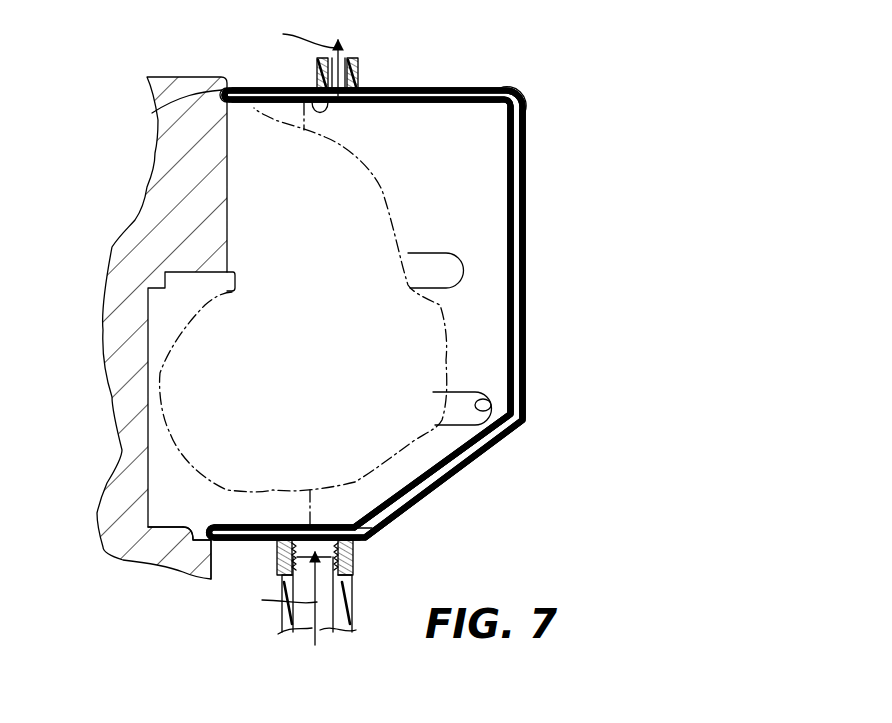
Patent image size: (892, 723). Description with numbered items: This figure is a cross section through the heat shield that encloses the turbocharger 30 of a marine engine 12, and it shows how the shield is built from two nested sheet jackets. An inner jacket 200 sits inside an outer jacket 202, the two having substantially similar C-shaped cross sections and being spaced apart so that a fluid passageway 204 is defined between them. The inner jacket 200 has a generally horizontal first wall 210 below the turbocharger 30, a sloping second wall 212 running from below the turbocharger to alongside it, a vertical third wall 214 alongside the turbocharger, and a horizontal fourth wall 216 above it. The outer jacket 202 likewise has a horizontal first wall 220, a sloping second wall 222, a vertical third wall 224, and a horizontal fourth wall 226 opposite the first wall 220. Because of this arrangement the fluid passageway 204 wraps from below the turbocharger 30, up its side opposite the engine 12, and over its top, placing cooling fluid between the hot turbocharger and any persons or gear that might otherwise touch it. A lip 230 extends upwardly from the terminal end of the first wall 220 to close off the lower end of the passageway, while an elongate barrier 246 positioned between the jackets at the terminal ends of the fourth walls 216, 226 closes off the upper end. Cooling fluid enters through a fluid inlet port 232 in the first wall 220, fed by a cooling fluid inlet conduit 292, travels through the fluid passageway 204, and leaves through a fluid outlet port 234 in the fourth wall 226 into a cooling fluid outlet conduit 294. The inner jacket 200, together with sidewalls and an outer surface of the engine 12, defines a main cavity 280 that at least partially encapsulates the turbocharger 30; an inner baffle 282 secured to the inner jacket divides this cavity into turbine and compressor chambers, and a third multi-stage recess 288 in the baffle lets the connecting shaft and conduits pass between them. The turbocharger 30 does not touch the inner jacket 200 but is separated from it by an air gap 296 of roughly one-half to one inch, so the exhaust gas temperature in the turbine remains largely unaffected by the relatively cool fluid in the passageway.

The marine engine 12 is at (100, 309).
The turbocharger 30 is at (390, 184).
The inner jacket 200 is at (505, 184).
The outer jacket 202 is at (529, 236).
The fluid passageway 204 is at (517, 165).
The first wall of inner jacket 210 is at (120, 465).
The second wall of inner jacket 212 is at (477, 453).
The third wall of inner jacket 214 is at (512, 302).
The fourth wall of inner jacket 216 is at (470, 104).
The first wall of outer jacket 220 is at (240, 543).
The second wall of outer jacket 222 is at (453, 486).
The third wall of outer jacket 224 is at (525, 266).
The fourth wall of outer jacket 226 is at (488, 88).
The lip 230 is at (187, 542).
The fluid inlet port 232 is at (370, 527).
The fluid outlet port 234 is at (303, 100).
The elongate barrier 246 is at (157, 108).
The main cavity 280 is at (478, 333).
The inner baffle 282 is at (392, 143).
The third multi-stage recess 288 is at (480, 402).
The cooling fluid inlet conduit 292 is at (337, 600).
The cooling fluid outlet conduit 294 is at (357, 73).
The air gap 296 is at (498, 229).